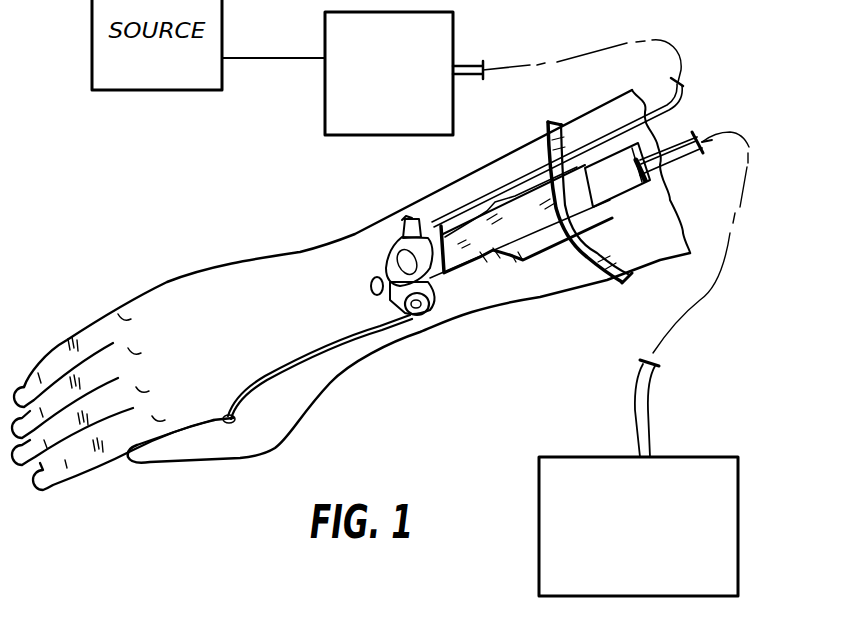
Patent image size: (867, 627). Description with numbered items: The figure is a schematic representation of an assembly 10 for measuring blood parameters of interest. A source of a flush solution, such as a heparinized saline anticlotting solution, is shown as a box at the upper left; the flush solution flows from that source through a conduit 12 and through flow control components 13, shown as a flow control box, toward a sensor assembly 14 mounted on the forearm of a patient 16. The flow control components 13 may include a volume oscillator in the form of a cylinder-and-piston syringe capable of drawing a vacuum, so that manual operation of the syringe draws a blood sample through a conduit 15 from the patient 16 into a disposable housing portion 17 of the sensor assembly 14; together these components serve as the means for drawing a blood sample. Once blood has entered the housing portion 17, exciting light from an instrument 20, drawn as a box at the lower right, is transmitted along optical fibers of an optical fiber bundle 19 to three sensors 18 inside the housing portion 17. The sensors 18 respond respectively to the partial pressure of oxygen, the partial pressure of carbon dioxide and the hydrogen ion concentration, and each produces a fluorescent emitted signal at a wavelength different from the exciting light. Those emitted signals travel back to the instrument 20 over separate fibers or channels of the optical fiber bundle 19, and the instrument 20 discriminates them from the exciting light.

The assembly 10 is at (704, 64).
The conduit 12 is at (472, 64).
The flow control components 13 is at (455, 22).
The sensor assembly 14 is at (467, 295).
The conduit 15 is at (300, 362).
The patient 16 is at (152, 285).
The disposable housing portion 17 is at (403, 233).
The sensors 18 is at (431, 220).
The optical fiber bundle 19 is at (645, 408).
The instrument 20 is at (738, 478).